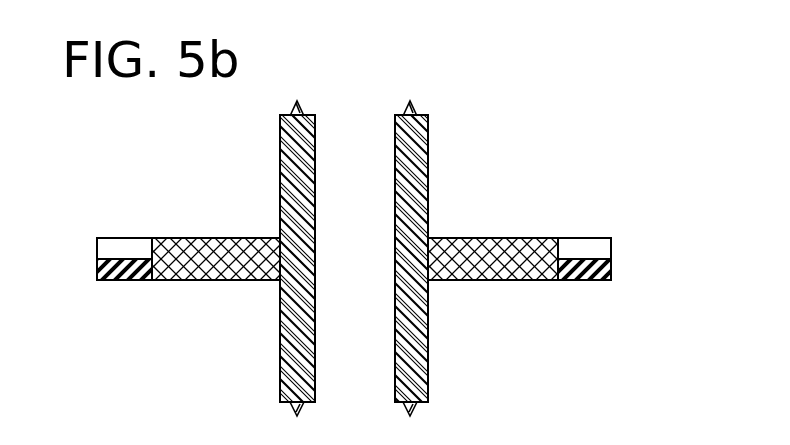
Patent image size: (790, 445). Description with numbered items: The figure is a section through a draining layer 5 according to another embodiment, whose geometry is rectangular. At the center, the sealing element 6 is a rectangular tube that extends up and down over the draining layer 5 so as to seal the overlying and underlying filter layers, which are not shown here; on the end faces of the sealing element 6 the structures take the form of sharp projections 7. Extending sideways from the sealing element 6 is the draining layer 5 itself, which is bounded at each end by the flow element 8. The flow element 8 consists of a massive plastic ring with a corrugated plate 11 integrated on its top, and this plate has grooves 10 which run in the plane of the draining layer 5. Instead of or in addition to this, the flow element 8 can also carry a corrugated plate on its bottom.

The draining layer 5 is at (533, 238).
The sealing element 6 is at (420, 149).
The sharp projections 7 is at (298, 101).
The flow element 8 is at (611, 271).
The grooves 10 is at (128, 249).
The corrugated plate 11 is at (598, 240).